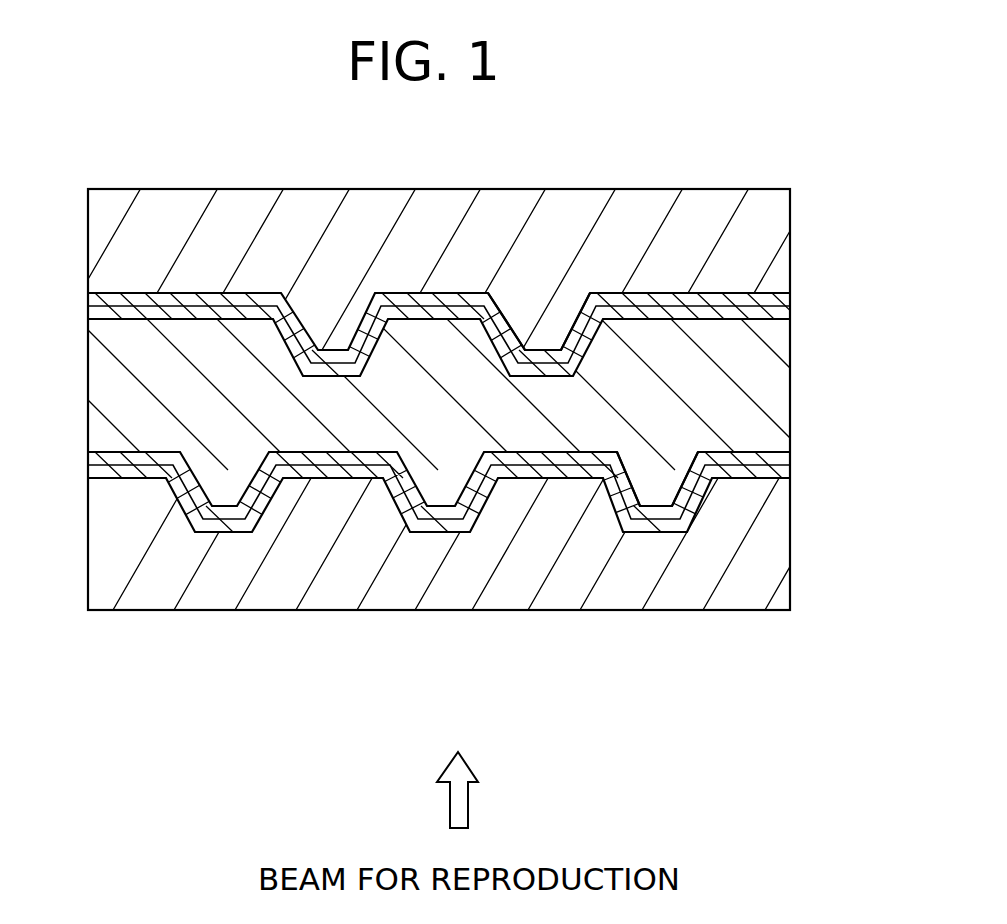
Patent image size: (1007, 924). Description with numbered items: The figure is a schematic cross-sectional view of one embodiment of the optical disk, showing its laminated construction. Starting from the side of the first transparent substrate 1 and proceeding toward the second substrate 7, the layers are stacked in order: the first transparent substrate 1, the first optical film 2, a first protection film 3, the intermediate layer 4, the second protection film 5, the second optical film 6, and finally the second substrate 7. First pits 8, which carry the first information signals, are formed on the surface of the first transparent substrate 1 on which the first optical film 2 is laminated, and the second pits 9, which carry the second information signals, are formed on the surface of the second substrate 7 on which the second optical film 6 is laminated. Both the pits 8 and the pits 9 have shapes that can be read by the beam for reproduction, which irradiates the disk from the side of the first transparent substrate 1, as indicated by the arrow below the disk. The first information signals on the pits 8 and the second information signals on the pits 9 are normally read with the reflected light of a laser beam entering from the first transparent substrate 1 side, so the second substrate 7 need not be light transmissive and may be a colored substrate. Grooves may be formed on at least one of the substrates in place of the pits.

The first transparent substrate 1 is at (782, 559).
The first optical film 2 is at (788, 473).
The first protection film 3 is at (792, 458).
The intermediate layer 4 is at (781, 372).
The second protection film 5 is at (790, 314).
The second optical film 6 is at (790, 299).
The second substrate 7 is at (775, 226).
The first pits 8 is at (658, 528).
The second pits 9 is at (552, 332).